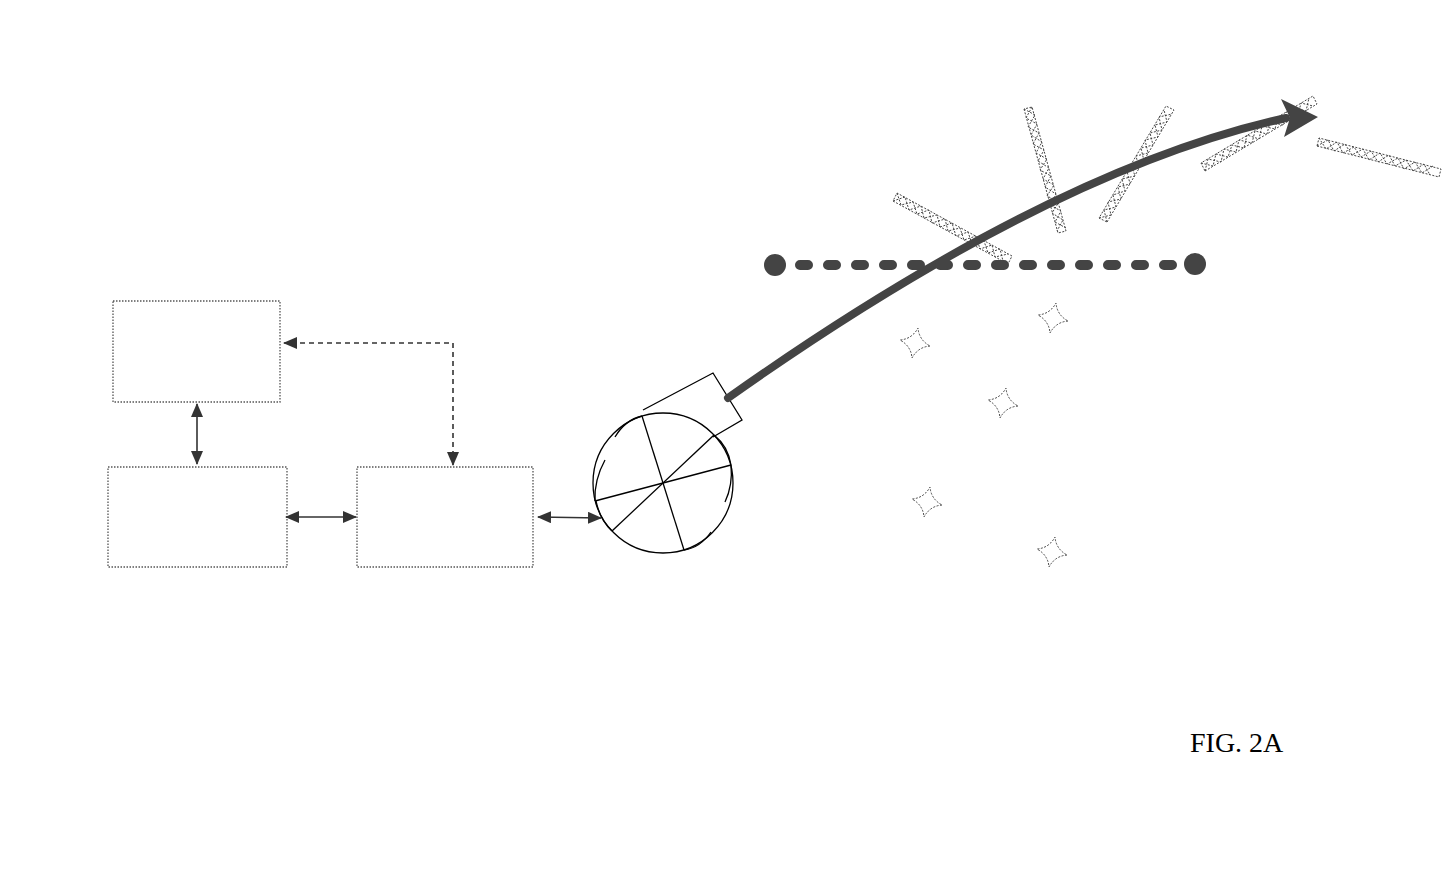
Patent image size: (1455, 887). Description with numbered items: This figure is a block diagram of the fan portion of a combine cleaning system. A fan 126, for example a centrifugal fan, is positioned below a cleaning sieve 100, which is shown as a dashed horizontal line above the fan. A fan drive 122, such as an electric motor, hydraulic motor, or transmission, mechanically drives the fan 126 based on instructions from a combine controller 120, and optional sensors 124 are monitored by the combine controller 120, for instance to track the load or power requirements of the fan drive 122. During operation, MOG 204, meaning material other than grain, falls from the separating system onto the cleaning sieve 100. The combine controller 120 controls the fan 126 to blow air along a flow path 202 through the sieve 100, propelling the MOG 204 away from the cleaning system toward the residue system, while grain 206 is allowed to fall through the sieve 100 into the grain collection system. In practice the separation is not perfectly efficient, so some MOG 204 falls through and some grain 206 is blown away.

The cleaning sieve 100 is at (810, 260).
The combine controller 120 is at (197, 517).
The fan drive 122 is at (445, 517).
The sensors 124 is at (196, 351).
The fan 126 is at (630, 418).
The flow path 202 is at (785, 372).
The MOG 204 is at (1038, 108).
The grain 206 is at (1074, 332).